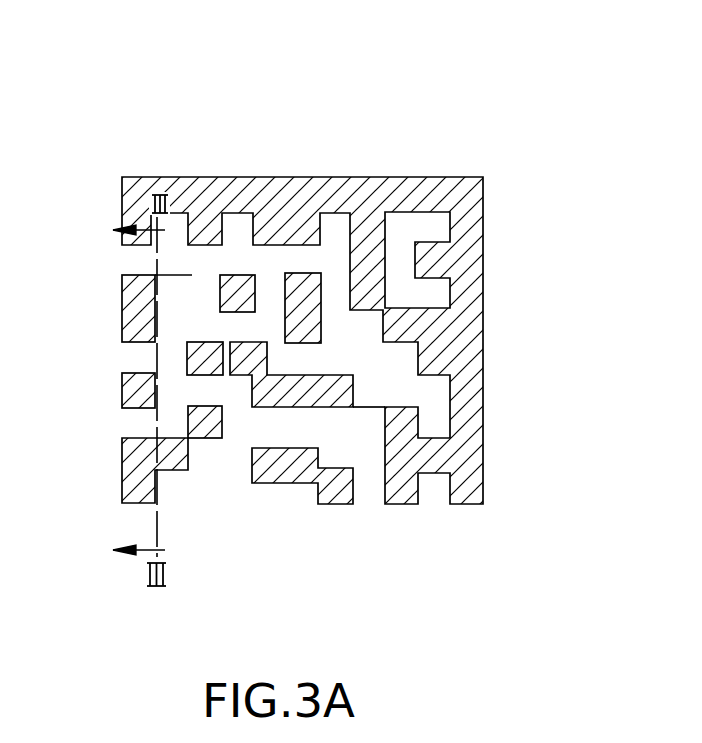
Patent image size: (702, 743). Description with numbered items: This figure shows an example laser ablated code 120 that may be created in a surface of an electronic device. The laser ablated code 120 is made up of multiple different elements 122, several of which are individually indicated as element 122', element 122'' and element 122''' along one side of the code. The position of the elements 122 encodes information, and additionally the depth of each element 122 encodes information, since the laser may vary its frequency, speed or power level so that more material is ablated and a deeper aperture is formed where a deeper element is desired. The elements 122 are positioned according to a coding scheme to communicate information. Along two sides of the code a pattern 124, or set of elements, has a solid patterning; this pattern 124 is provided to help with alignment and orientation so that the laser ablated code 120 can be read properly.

The laser ablated code 120 is at (302, 298).
The elements 122 is at (302, 513).
The element 122' is at (109, 470).
The element 122'' is at (92, 389).
The element 122''' is at (111, 308).
The pattern 124 is at (343, 177).